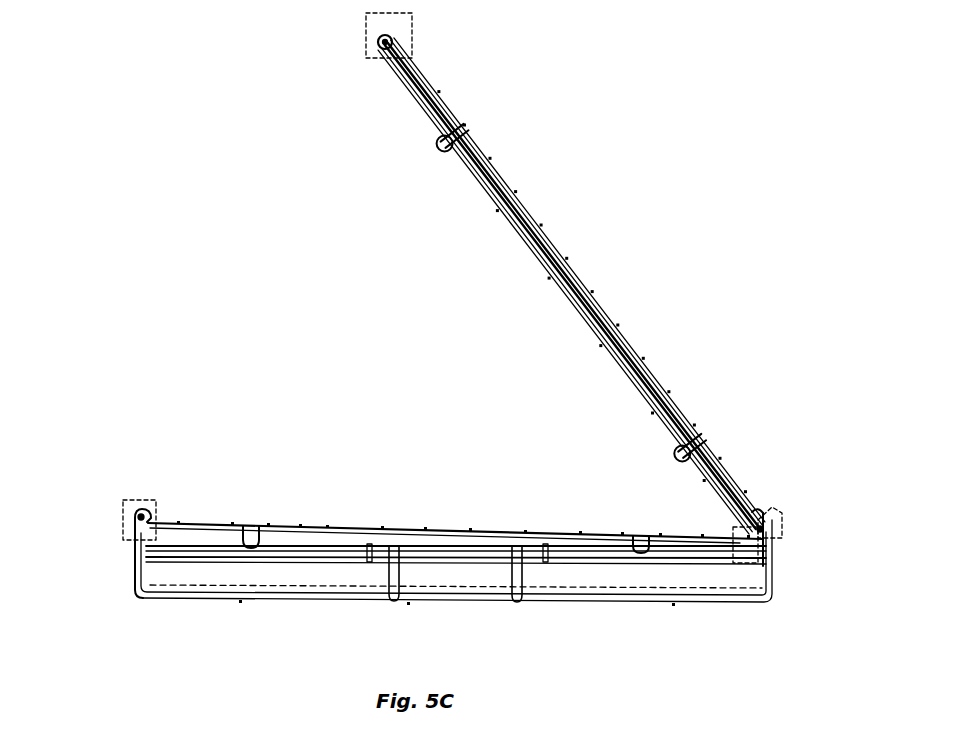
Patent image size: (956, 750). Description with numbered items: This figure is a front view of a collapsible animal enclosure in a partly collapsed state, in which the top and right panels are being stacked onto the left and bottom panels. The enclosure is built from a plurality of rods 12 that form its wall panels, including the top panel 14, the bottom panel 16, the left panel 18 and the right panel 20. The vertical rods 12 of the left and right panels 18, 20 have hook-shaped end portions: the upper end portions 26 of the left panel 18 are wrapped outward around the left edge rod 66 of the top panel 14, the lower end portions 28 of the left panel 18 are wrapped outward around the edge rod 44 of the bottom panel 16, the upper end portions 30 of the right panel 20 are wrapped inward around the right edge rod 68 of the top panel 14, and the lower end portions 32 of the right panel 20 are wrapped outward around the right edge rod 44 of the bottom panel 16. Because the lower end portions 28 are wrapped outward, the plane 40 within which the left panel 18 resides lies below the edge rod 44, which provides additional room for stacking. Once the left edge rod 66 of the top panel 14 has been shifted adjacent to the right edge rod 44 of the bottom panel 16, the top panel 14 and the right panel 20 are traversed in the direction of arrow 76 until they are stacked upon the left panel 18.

The rods 12 is at (456, 563).
The top panel 14 is at (534, 309).
The bottom panel 16 is at (605, 612).
The left panel 18 is at (447, 512).
The right panel 20 is at (571, 286).
The upper end portions 26 is at (735, 535).
The lower end portions 28 is at (150, 497).
The upper end portions 30 is at (412, 30).
The lower end portions 32 is at (770, 510).
The plane 40 is at (105, 494).
The right edge rod 44 is at (138, 528).
The left edge rod 66 is at (766, 531).
The right edge rod 68 is at (380, 38).
The directional arrow 76 is at (429, 297).